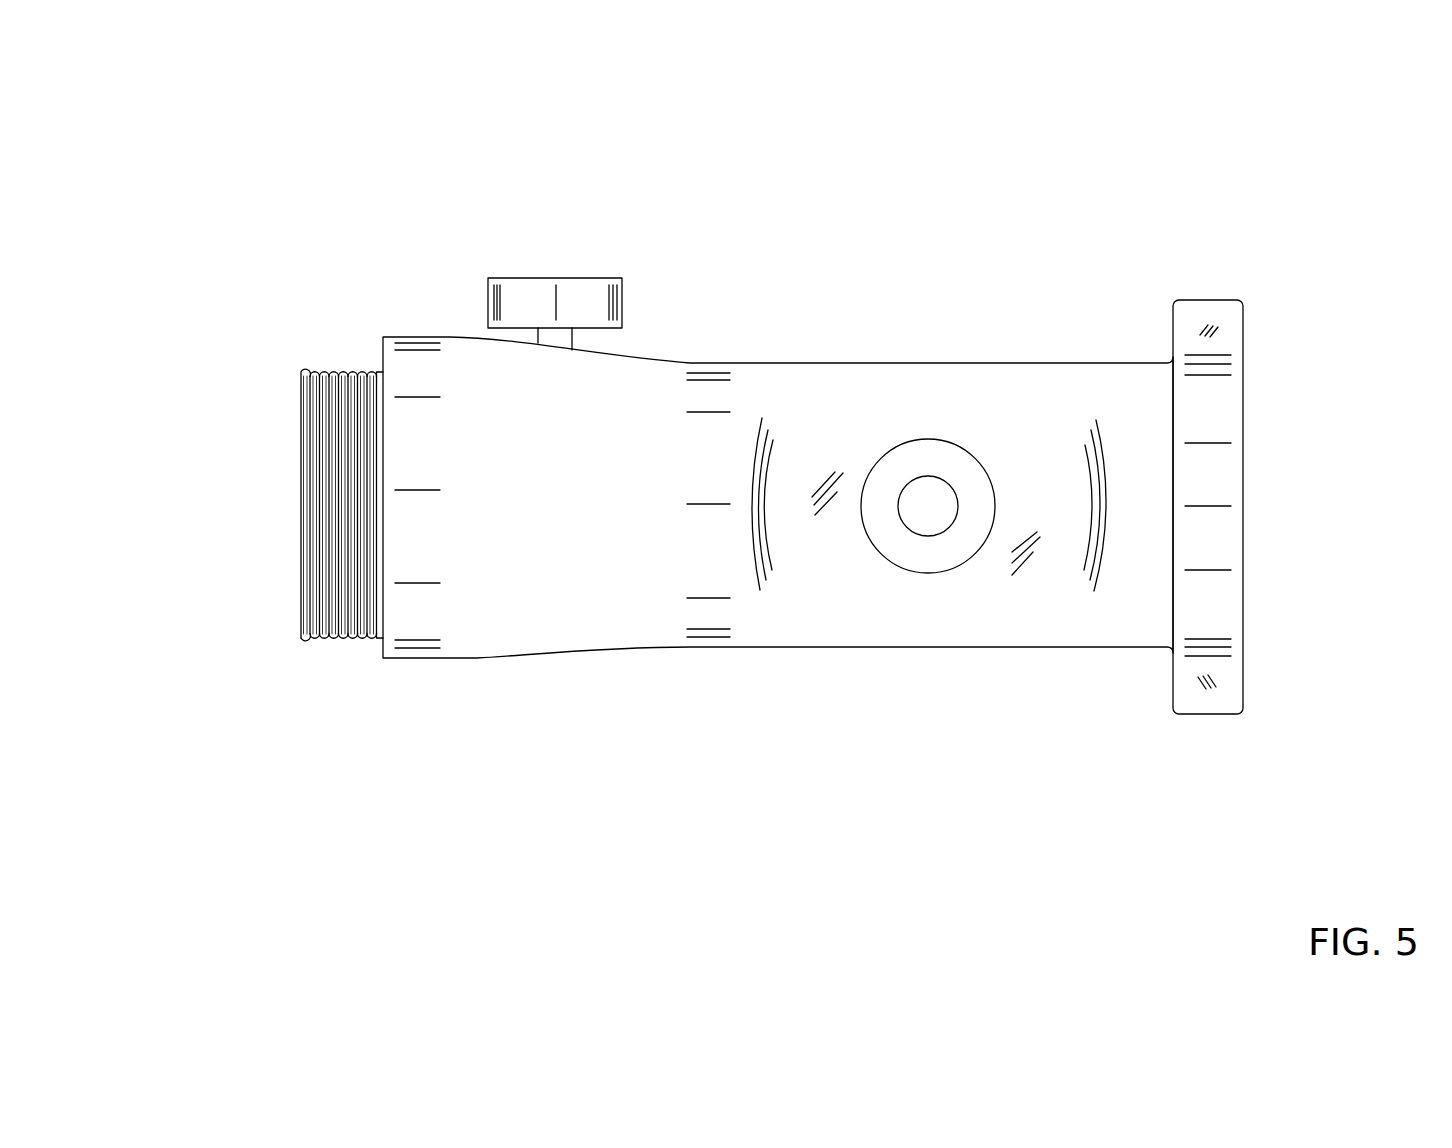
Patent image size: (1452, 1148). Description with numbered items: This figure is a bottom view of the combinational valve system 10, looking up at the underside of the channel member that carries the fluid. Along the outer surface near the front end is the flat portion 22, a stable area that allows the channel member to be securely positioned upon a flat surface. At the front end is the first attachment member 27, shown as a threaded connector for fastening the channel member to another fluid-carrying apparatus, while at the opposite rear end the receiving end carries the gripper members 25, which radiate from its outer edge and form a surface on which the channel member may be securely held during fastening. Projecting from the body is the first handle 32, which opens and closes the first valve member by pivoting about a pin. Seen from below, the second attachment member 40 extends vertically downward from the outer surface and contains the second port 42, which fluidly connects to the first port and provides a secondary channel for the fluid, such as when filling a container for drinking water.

The combinational valve system 10 is at (295, 154).
The flat portion 22 is at (495, 660).
The gripper members 25 is at (1220, 307).
The first attachment member 27 is at (345, 622).
The first handle 32 is at (583, 290).
The second attachment member 40 is at (930, 453).
The second port 42 is at (927, 537).